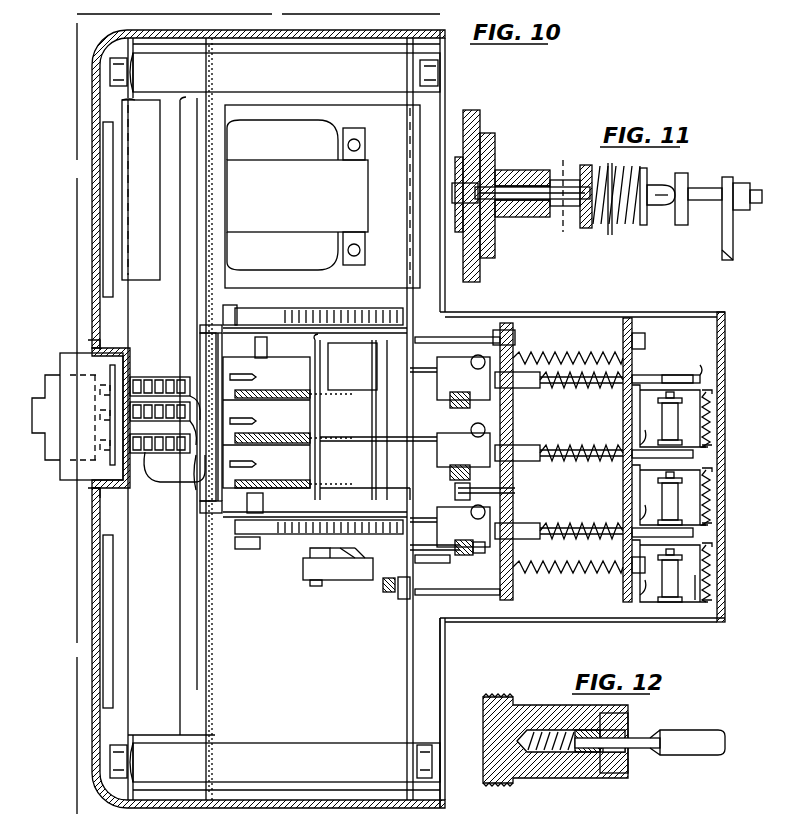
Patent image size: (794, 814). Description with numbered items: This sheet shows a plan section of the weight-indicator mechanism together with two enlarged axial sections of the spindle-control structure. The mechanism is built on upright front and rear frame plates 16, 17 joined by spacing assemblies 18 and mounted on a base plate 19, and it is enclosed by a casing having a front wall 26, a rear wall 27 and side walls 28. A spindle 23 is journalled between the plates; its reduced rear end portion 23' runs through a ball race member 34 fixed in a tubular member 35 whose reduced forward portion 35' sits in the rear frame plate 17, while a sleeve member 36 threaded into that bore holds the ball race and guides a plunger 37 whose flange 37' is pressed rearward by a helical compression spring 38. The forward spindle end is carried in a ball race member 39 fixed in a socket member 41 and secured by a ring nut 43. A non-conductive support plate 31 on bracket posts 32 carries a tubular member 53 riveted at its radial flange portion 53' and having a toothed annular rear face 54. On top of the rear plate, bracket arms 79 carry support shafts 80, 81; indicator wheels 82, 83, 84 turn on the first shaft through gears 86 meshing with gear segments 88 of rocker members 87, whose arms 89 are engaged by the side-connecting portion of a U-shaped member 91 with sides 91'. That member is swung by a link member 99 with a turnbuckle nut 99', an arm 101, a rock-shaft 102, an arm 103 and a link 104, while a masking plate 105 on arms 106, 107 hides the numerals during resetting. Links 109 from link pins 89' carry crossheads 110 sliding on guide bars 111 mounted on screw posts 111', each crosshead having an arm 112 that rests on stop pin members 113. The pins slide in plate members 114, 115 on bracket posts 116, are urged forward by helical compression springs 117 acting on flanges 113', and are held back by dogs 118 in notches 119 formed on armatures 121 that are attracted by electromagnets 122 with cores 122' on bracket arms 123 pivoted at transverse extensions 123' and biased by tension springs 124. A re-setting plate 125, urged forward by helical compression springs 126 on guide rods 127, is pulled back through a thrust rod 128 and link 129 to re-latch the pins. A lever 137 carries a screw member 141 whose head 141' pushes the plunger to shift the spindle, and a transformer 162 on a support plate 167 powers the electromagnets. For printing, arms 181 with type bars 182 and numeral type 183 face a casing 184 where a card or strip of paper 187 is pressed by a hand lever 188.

In FIG. 10, the front frame plate 16 is at (128, 645).
In FIG. 10, the rear frame plate 17 is at (407, 635).
In FIG. 10, the spacing assemblies 18 is at (305, 84).
In FIG. 10, the base plate 19 is at (448, 648).
In FIG. 11, the spindle 23 is at (521, 193).
In FIG. 12, the spindle 23 is at (687, 757).
In FIG. 11, the reduced rear end portion of spindle 23' is at (556, 209).
In FIG. 10, the front wall 26 is at (96, 172).
In FIG. 10, the rear wall 27 is at (722, 314).
In FIG. 10, the side walls 28 is at (80, 24).
In FIG. 10, the support plate 31 is at (205, 700).
In FIG. 10, the bracket posts 32 is at (160, 740).
In FIG. 11, the ball race member 34 is at (498, 228).
In FIG. 11, the tubular member 35 is at (498, 195).
In FIG. 11, the reduced forward portion of tubular member 35' is at (471, 157).
In FIG. 11, the sleeve member 36 is at (582, 228).
In FIG. 11, the plunger 37 is at (661, 225).
In FIG. 11, the flange 37' is at (616, 213).
In FIG. 11, the helical compression spring 38 is at (643, 170).
In FIG. 12, the ball race member 39 is at (592, 778).
In FIG. 12, the socket member 41 is at (546, 704).
In FIG. 12, the ring nut 43 is at (628, 768).
In FIG. 10, the tubular member 53 is at (228, 419).
In FIG. 10, the radial flange portion 53' is at (170, 394).
In FIG. 10, the toothed annular rear face 54 is at (214, 636).
In FIG. 10, the bracket arms 79 is at (336, 312).
In FIG. 10, the support shaft 80 is at (283, 318).
In FIG. 10, the support shaft 81 is at (243, 549).
In FIG. 10, the indicator wheel 82 is at (322, 372).
In FIG. 10, the indicator wheel 83 is at (310, 405).
In FIG. 10, the indicator wheel 84 is at (310, 447).
In FIG. 10, the gears 86 is at (322, 436).
In FIG. 10, the rocker members 87 is at (355, 488).
In FIG. 10, the gear segments 88 is at (340, 490).
In FIG. 10, the arms 89 is at (430, 422).
In FIG. 10, the link pins 89' is at (457, 421).
In FIG. 10, the U-shaped member 91 is at (355, 424).
In FIG. 10, the sides of U-shaped member 91' is at (307, 428).
In FIG. 10, the link member 99 is at (325, 564).
In FIG. 10, the turnbuckle nut 99' is at (330, 547).
In FIG. 10, the arm 101 is at (342, 580).
In FIG. 10, the rock-shaft 102 is at (386, 592).
In FIG. 10, the arm 103 is at (340, 338).
In FIG. 10, the link 104 is at (285, 348).
In FIG. 10, the masking plate 105 is at (208, 348).
In FIG. 10, the arm 106 is at (214, 505).
In FIG. 10, the arm 107 is at (212, 328).
In FIG. 10, the links 109 is at (490, 440).
In FIG. 10, the crosshead 110 is at (462, 535).
In FIG. 10, the guide bar 111 is at (442, 560).
In FIG. 10, the screw posts 111' is at (432, 566).
In FIG. 10, the arm 112 is at (485, 555).
In FIG. 10, the stop pin members 113 is at (662, 442).
In FIG. 10, the flanges 113' is at (531, 455).
In FIG. 10, the plate member 114 is at (505, 340).
In FIG. 10, the plate member 115 is at (632, 330).
In FIG. 10, the bracket posts 116 is at (445, 339).
In FIG. 10, the helical compression springs 117 is at (582, 386).
In FIG. 10, the dogs 118 is at (616, 475).
In FIG. 10, the notches 119 is at (664, 376).
In FIG. 10, the armatures 121 is at (693, 383).
In FIG. 10, the electromagnets 122 is at (670, 497).
In FIG. 10, the cores 122' is at (650, 474).
In FIG. 10, the bracket arms 123 is at (672, 522).
In FIG. 10, the transverse extensions 123' is at (694, 598).
In FIG. 10, the tension springs 124 is at (713, 486).
In FIG. 10, the re-setting plate 125 is at (514, 430).
In FIG. 10, the helical compression springs 126 is at (570, 350).
In FIG. 10, the guide rods 127 is at (630, 336).
In FIG. 10, the thrust rod 128 is at (518, 490).
In FIG. 10, the link 129 is at (470, 488).
In FIG. 11, the lever 137 is at (722, 255).
In FIG. 11, the member 141 is at (721, 207).
In FIG. 11, the head 141' is at (691, 209).
In FIG. 10, the transformer 162 is at (304, 203).
In FIG. 10, the support plate 167 is at (396, 126).
In FIG. 10, the arms 181 is at (170, 487).
In FIG. 10, the type bars 182 is at (174, 439).
In FIG. 10, the numeral type 183 is at (180, 378).
In FIG. 10, the casing 184 is at (97, 416).
In FIG. 10, the card or strip of paper 187 is at (65, 482).
In FIG. 10, the lever 188 is at (53, 440).